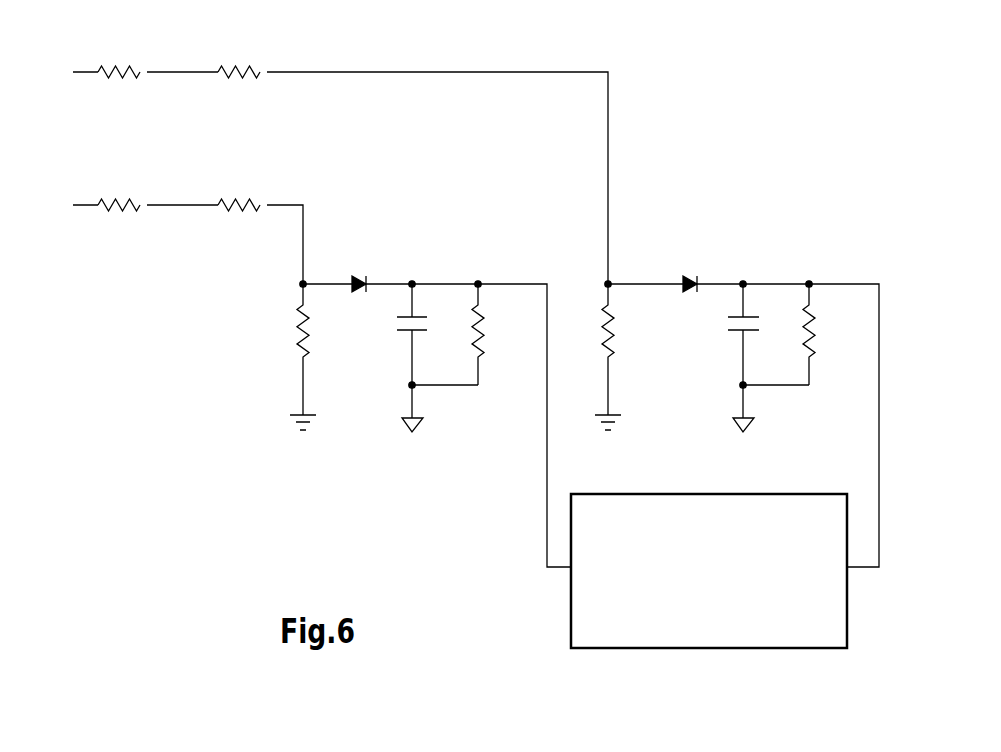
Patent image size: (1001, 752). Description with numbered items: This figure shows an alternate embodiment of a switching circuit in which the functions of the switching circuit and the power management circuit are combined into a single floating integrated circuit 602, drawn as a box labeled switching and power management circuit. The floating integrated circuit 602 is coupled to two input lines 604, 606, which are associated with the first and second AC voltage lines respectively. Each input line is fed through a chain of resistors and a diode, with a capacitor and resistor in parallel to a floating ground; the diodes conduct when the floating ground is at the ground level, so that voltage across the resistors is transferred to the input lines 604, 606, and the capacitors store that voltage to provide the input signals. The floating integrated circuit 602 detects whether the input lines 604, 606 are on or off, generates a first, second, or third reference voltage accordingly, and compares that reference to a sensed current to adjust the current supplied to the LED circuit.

The floating integrated circuit 602 is at (723, 648).
The input line 604 is at (879, 502).
The input line 606 is at (547, 499).